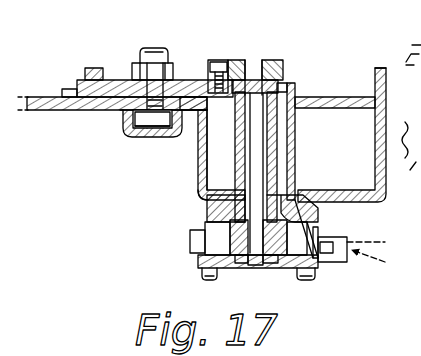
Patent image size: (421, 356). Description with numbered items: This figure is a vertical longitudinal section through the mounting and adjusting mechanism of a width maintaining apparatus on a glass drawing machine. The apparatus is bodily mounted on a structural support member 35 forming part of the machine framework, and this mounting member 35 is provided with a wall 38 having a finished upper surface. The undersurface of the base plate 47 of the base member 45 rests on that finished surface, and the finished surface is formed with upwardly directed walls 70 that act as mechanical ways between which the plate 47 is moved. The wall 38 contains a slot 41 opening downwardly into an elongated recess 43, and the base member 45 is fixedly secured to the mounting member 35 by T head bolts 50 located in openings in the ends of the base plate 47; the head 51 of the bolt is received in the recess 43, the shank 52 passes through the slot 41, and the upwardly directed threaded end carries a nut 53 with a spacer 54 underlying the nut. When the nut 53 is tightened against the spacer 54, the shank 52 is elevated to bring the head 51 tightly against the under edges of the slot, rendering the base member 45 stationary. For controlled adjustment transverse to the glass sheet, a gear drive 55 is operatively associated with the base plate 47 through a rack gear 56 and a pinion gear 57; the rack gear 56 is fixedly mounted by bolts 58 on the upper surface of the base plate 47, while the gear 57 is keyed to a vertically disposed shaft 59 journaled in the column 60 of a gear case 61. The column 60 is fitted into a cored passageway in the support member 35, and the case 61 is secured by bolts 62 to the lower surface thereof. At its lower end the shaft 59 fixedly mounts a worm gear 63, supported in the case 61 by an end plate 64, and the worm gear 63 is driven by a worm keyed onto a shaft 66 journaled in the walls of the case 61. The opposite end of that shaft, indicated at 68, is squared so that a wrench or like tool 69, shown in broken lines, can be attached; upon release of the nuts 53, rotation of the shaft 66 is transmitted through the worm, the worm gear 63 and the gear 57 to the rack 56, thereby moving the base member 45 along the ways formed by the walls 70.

The structural support member 35 is at (368, 201).
The wall 38 is at (43, 100).
The slot 41 is at (125, 113).
The elongated recess 43 is at (140, 121).
The base member 45 is at (113, 79).
The base plate 47 is at (100, 88).
The T head bolt 50 is at (158, 46).
The bolt head 51 is at (158, 118).
The bolt shank 52 is at (152, 128).
The nut 53 is at (150, 50).
The spacer 54 is at (138, 73).
The gear drive 55 is at (263, 58).
The rack gear 56 is at (234, 62).
The pinion gear 57 is at (277, 62).
The bolt 58 is at (218, 62).
The shaft 59 is at (252, 133).
The column 60 is at (280, 157).
The gear case 61 is at (212, 210).
The bolt 62 is at (200, 273).
The worm gear 63 is at (210, 248).
The end plate 64 is at (232, 268).
The shaft 66 is at (317, 237).
The squared end of shaft 68 is at (333, 262).
The tool 69 is at (378, 258).
The upwardly directed wall 70 is at (63, 94).